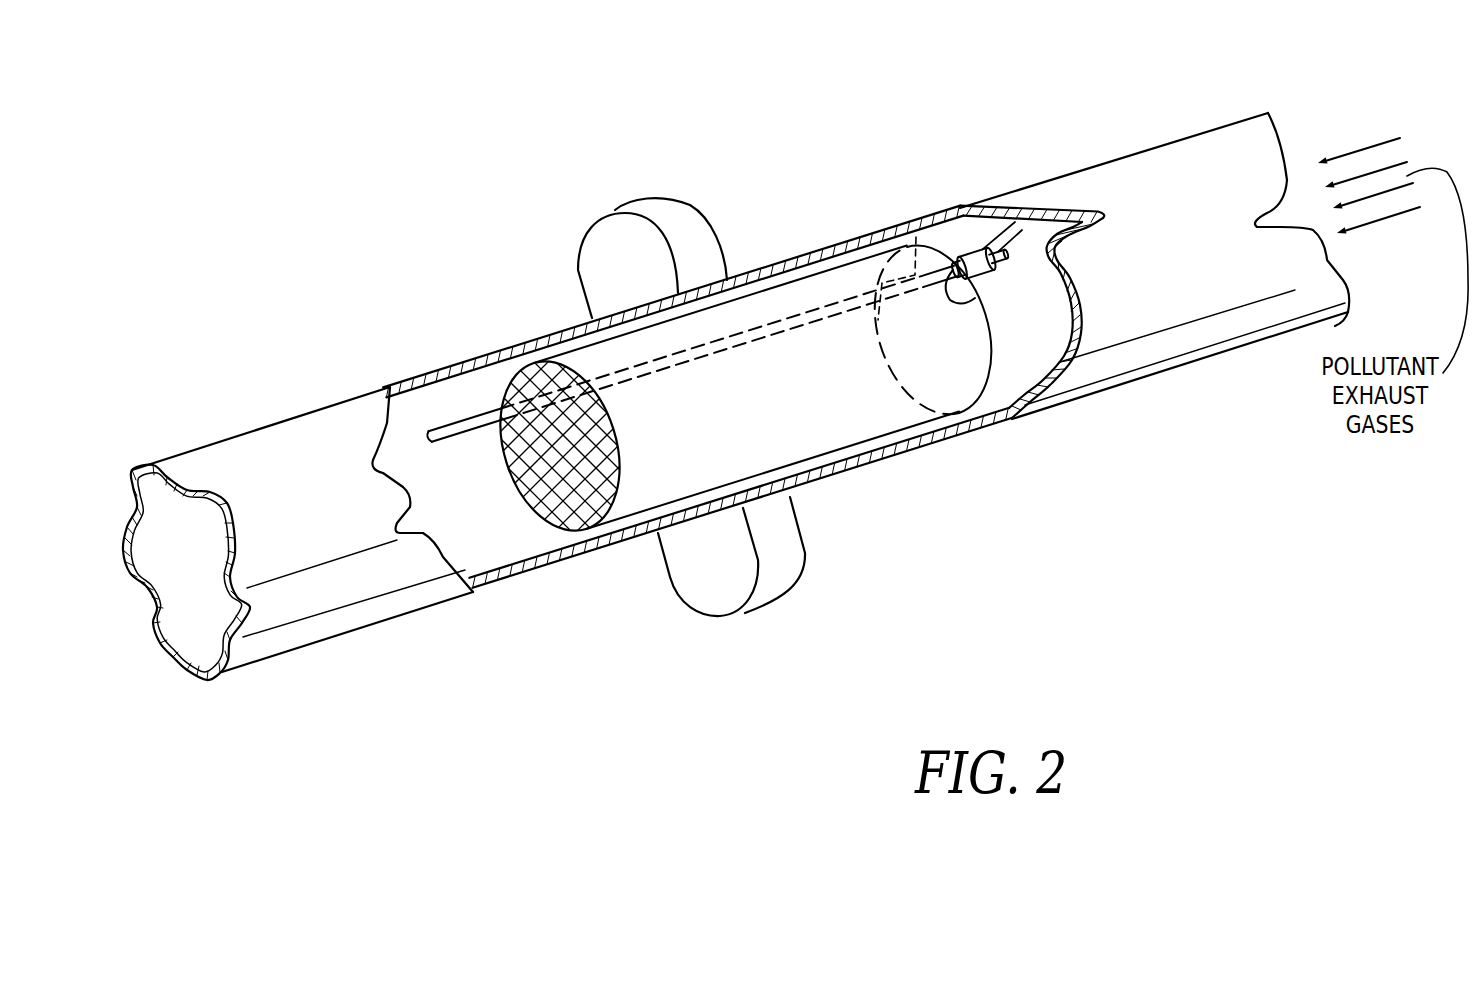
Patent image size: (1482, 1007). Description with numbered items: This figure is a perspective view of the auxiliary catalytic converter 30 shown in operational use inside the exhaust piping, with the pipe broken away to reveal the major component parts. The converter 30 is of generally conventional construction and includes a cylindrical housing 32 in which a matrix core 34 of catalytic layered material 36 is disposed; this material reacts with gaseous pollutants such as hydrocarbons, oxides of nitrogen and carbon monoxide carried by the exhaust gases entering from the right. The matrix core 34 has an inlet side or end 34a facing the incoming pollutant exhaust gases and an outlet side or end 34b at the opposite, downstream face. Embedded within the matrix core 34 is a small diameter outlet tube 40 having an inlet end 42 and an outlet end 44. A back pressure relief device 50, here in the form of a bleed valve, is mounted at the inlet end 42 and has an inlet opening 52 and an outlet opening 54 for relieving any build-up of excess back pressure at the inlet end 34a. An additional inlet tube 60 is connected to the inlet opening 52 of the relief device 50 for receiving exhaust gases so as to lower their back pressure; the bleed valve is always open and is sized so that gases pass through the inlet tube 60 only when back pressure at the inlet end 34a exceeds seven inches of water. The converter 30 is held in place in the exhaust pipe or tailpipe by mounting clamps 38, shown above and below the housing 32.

The auxiliary catalytic converter 30 is at (815, 443).
The cylindrical housing 32 is at (848, 340).
The matrix core 34 is at (561, 520).
The inlet side or end 34a is at (981, 347).
The outlet side or end 34b is at (547, 457).
The catalytic layered material 36 is at (570, 443).
The mounting clamp 38 is at (617, 243).
The small diameter outlet tube 40 is at (484, 408).
The inlet end 42 is at (917, 235).
The outlet end 44 is at (393, 385).
The back pressure relief device 50 is at (960, 240).
The inlet opening 52 is at (981, 247).
The outlet opening 54 is at (977, 297).
The inlet tube 60 is at (1028, 213).